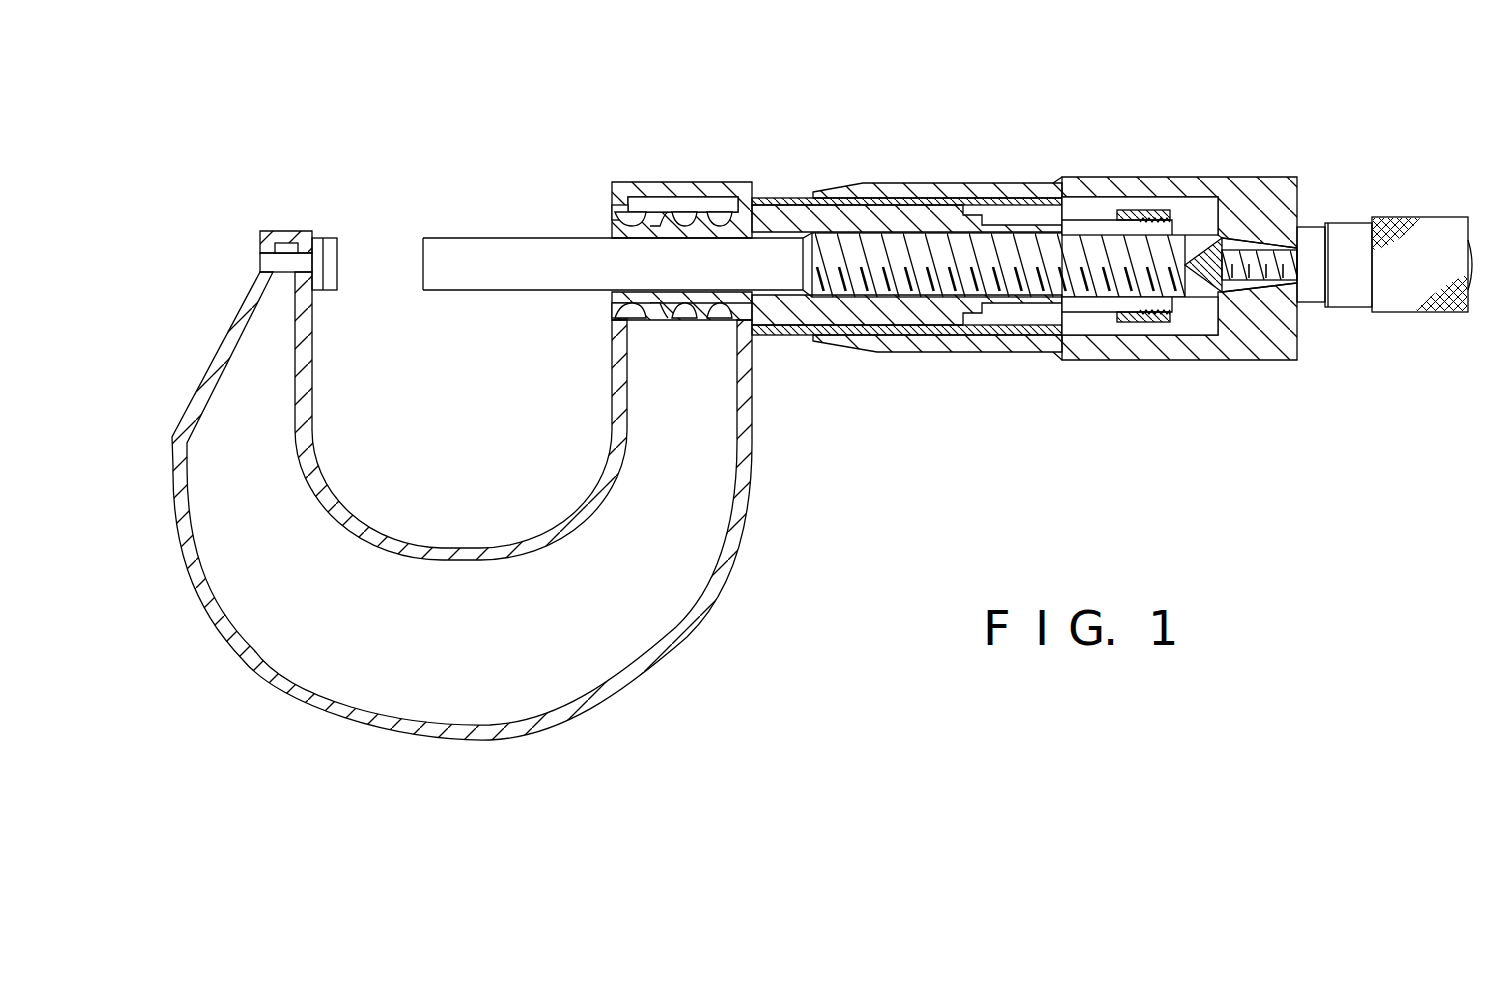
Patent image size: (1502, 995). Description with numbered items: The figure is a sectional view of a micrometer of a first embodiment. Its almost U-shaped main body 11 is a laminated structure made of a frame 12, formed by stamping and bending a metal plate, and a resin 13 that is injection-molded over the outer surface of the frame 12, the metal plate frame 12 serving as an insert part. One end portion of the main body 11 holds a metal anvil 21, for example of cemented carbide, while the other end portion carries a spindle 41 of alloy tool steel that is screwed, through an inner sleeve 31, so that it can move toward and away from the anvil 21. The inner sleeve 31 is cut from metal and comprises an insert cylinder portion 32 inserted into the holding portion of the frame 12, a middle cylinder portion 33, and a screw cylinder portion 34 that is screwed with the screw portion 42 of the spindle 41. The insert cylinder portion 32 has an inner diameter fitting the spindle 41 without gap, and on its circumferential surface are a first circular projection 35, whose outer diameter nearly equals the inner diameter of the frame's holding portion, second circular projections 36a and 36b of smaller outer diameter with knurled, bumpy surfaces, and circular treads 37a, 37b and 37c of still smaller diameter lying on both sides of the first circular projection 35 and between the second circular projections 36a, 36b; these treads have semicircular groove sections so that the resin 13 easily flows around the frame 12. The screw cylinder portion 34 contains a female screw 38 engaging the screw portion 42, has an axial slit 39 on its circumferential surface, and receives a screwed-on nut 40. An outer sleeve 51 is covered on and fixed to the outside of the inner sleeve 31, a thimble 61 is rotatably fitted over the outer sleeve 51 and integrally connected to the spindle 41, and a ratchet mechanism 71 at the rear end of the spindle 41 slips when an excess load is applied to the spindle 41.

The main body 11 is at (462, 556).
The frame 12 is at (461, 529).
The resin 13 is at (627, 688).
The anvil 21 is at (326, 238).
The inner sleeve 31 is at (930, 325).
The insert cylinder portion 32 is at (679, 172).
The middle cylinder portion 33 is at (920, 217).
The screw cylinder portion 34 is at (1092, 232).
The first circular projection 35 is at (722, 198).
The second circular projection 36a is at (612, 207).
The second circular projection 36b is at (670, 212).
The circular tread 37a is at (636, 212).
The circular tread 37b is at (686, 212).
The circular tread 37c is at (757, 227).
The female screw 38 is at (1050, 220).
The slit 39 is at (1118, 215).
The nut 40 is at (1155, 220).
The spindle 41 is at (500, 291).
The screw portion 42 is at (1056, 278).
The outer sleeve 51 is at (787, 335).
The thimble 61 is at (1150, 272).
The ratchet mechanism 71 is at (1402, 309).